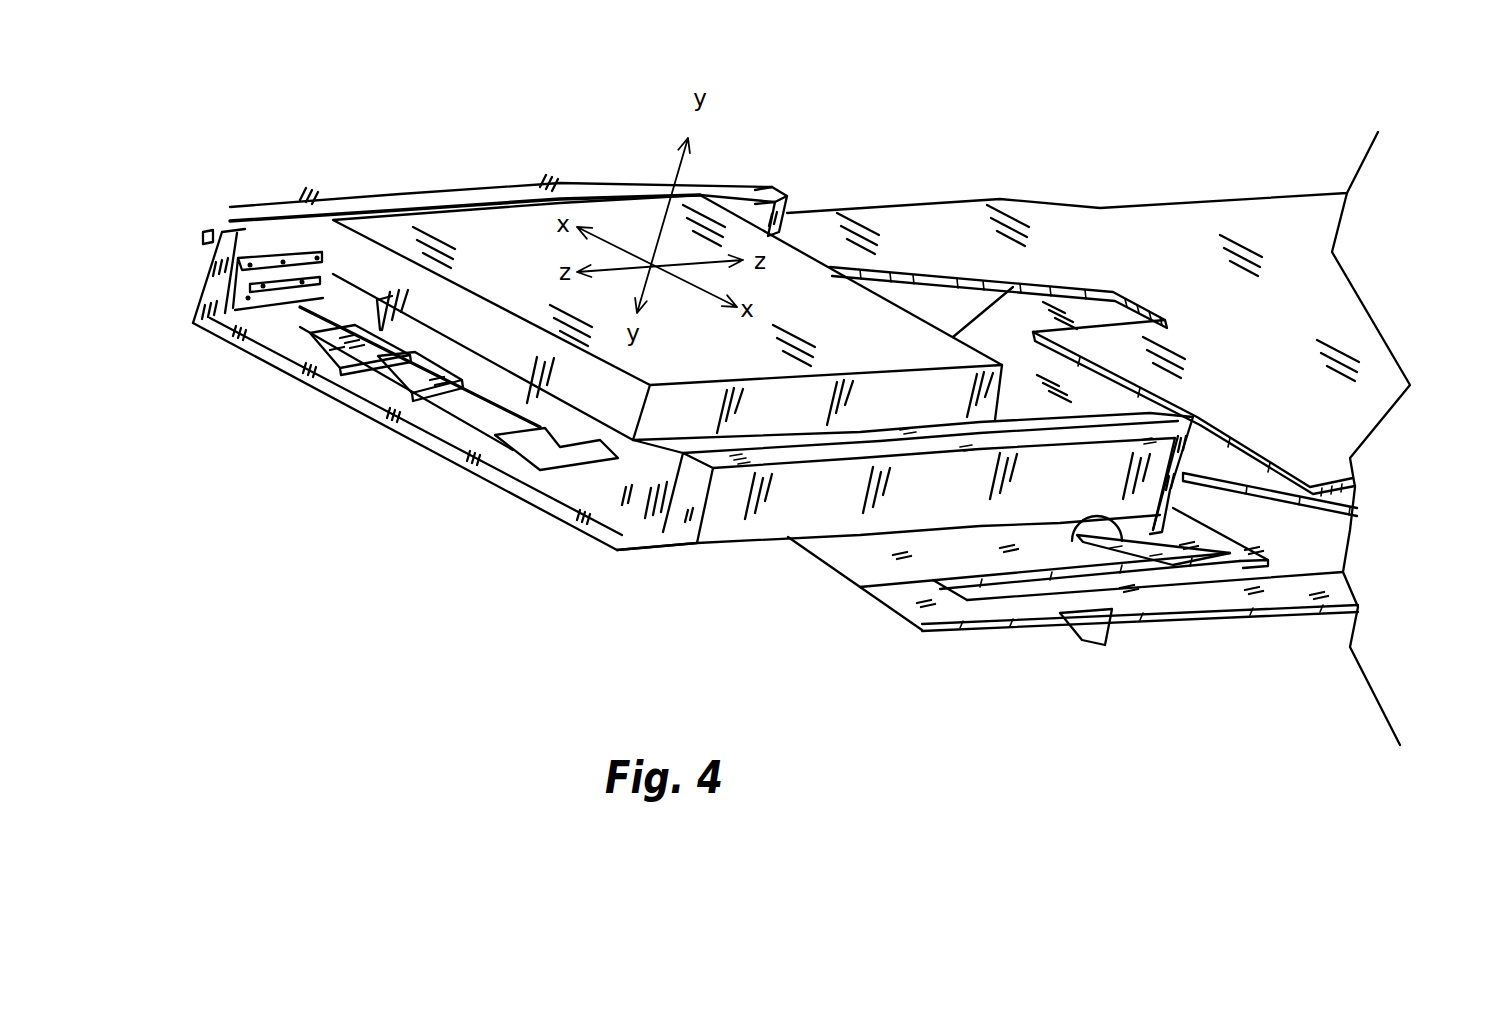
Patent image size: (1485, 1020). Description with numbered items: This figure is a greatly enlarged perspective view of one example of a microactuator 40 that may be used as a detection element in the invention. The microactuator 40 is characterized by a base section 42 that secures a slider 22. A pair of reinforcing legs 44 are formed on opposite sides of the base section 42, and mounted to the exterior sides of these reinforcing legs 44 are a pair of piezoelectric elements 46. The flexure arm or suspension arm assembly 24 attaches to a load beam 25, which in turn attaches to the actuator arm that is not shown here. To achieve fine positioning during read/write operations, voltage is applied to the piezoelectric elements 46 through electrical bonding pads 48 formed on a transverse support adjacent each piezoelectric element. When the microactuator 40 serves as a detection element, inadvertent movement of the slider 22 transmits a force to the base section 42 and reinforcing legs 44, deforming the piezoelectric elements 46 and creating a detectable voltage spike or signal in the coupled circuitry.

The slider 22 is at (667, 317).
The flexure arm or suspension arm assembly 24 is at (873, 680).
The load beam 25 is at (1018, 313).
The microactuator 40 is at (438, 517).
The base section 42 is at (408, 427).
The reinforcing legs 44 is at (230, 210).
The piezoelectric elements 46 is at (470, 193).
The electrical bonding pads 48 is at (1153, 543).